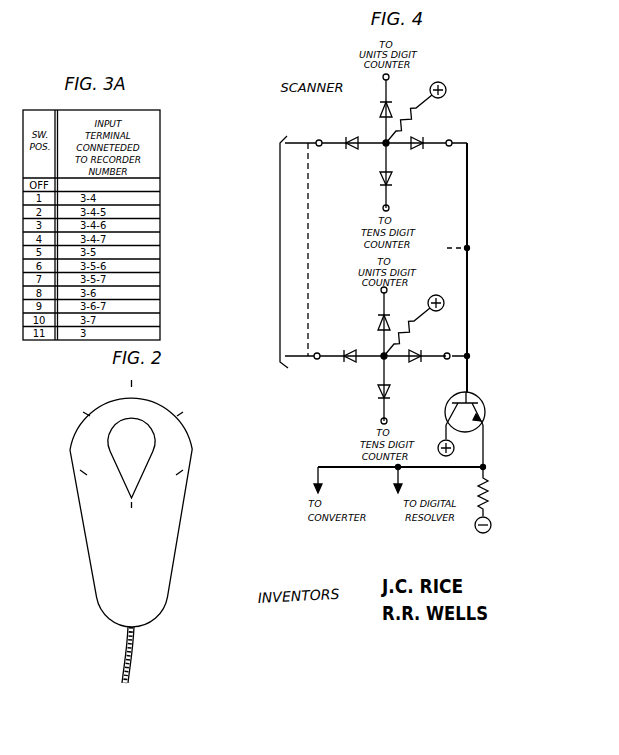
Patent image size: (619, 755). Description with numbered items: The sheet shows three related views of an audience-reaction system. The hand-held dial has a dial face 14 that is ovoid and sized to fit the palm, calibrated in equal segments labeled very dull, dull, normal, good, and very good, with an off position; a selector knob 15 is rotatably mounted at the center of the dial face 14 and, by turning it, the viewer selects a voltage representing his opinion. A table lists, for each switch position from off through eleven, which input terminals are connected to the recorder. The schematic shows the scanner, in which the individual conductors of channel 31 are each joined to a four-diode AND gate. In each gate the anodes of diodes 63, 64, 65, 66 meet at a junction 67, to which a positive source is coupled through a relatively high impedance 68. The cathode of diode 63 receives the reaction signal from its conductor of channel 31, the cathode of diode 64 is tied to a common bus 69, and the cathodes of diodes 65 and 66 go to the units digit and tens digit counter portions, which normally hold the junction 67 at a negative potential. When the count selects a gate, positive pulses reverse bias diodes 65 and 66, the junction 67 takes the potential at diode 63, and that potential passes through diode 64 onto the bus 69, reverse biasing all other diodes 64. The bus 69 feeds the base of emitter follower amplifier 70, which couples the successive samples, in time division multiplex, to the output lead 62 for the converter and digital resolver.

In FIG. 2, the dial face 14 is at (182, 517).
In FIG. 2, the selector knob 15 is at (122, 447).
In FIG. 4, the channel 31 is at (280, 250).
In FIG. 4, the output terminal 62 is at (485, 446).
In FIG. 4, the diode 63 is at (349, 151).
In FIG. 4, the diode 64 is at (416, 150).
In FIG. 4, the diode 65 is at (380, 106).
In FIG. 4, the diode 66 is at (380, 179).
In FIG. 4, the junction 67 is at (389, 147).
In FIG. 4, the impedance 68 is at (424, 113).
In FIG. 4, the bus 69 is at (470, 201).
In FIG. 4, the emitter follower amplifier 70 is at (504, 401).